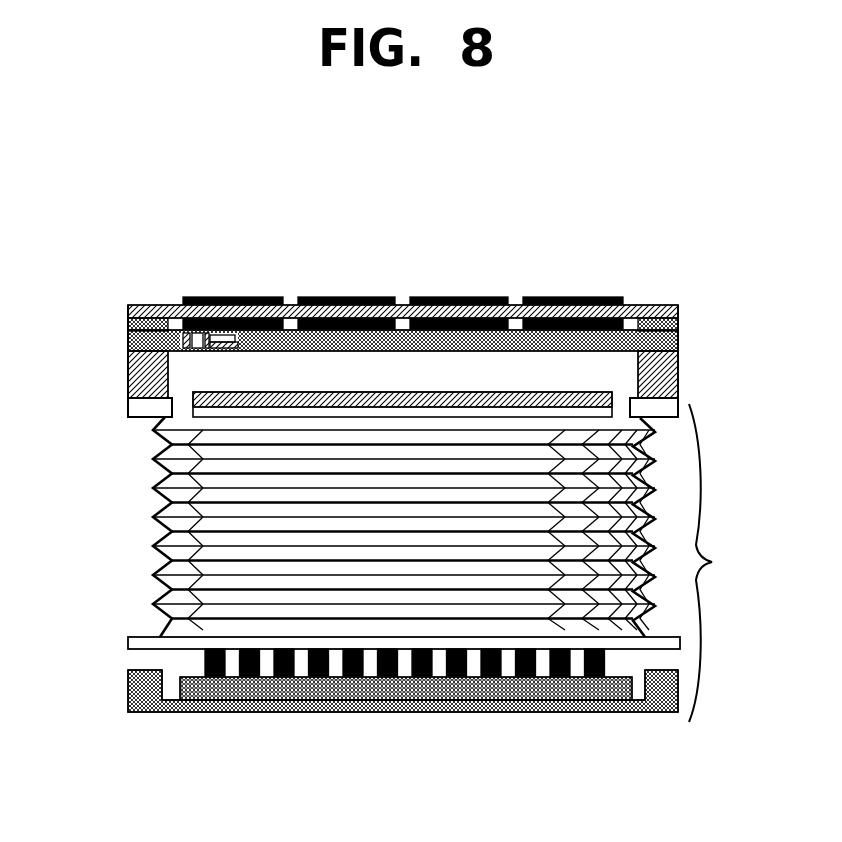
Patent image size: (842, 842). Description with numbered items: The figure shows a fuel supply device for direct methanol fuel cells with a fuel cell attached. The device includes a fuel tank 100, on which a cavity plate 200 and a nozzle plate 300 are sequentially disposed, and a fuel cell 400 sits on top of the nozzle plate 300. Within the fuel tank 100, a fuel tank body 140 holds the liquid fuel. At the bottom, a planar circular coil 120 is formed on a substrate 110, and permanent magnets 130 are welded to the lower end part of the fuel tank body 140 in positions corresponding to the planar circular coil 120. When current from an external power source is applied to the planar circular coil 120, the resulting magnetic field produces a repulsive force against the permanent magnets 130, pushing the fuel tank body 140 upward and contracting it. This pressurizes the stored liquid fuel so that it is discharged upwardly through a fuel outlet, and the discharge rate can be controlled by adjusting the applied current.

The fuel tank 100 is at (723, 563).
The substrate 110 is at (128, 687).
The planar circular coil 120 is at (233, 688).
The permanent magnets 130 is at (208, 649).
The fuel tank body 140 is at (153, 517).
The cavity plate 200 is at (128, 378).
The nozzle plate 300 is at (128, 330).
The fuel cell 400 is at (160, 305).